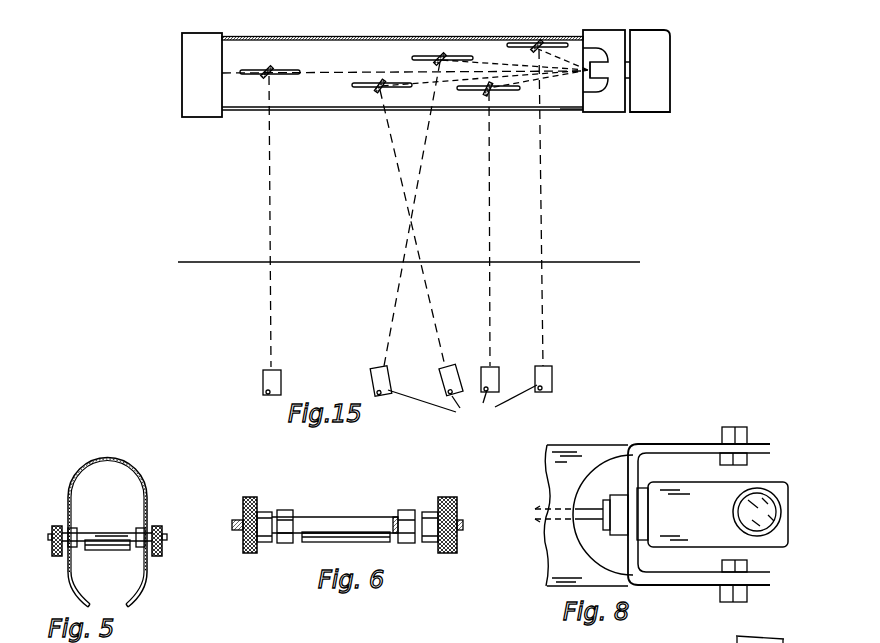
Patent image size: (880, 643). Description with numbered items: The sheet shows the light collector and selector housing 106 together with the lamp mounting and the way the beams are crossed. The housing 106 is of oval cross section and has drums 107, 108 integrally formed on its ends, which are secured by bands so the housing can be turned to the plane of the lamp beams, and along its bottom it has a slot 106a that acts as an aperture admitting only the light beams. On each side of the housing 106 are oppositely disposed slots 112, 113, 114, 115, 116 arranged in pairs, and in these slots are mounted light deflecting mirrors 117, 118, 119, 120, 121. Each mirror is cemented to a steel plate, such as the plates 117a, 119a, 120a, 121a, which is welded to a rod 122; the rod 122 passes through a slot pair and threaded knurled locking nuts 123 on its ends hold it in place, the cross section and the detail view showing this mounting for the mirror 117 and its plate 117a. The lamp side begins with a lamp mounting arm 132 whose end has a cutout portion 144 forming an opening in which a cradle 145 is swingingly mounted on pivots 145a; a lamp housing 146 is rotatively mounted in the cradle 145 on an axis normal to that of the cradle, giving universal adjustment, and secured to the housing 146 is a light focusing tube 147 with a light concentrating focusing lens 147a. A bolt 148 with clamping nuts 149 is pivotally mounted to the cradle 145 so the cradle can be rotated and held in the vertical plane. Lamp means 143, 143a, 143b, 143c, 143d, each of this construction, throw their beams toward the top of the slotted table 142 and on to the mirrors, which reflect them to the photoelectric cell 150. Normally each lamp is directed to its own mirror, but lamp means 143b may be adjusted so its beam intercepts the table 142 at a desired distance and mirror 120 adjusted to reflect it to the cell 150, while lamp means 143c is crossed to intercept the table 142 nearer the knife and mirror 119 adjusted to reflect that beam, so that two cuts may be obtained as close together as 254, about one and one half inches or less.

In FIG. 15, the light collector and selector housing 106 is at (366, 37).
In FIG. 5, the light collector and selector housing 106 is at (85, 465).
In FIG. 15, the slot 106a is at (573, 116).
In FIG. 5, the slot 106a is at (110, 604).
In FIG. 15, the drum 107 is at (622, 113).
In FIG. 15, the drum 108 is at (182, 78).
In FIG. 15, the slot 112 is at (568, 32).
In FIG. 15, the slot 113 is at (468, 92).
In FIG. 15, the slot 114 is at (441, 56).
In FIG. 15, the slot 115 is at (398, 83).
In FIG. 15, the slot 116 is at (265, 70).
In FIG. 15, the light deflecting mirror 117 is at (583, 50).
In FIG. 5, the light deflecting mirror 117 is at (112, 550).
In FIG. 6, the light deflecting mirror 117 is at (330, 542).
In FIG. 15, the steel plate 117a is at (537, 47).
In FIG. 5, the steel plate 117a is at (103, 535).
In FIG. 6, the steel plate 117a is at (315, 530).
In FIG. 15, the light deflecting mirror 118 is at (492, 96).
In FIG. 15, the light deflecting mirror 119 is at (457, 60).
In FIG. 15, the steel plate 119a is at (422, 60).
In FIG. 15, the light deflecting mirror 120 is at (380, 93).
In FIG. 15, the steel plate 120a is at (374, 83).
In FIG. 15, the light deflecting mirror 121 is at (264, 79).
In FIG. 15, the steel plate 121a is at (270, 70).
In FIG. 15, the rod 122 is at (266, 74).
In FIG. 5, the rod 122 is at (118, 530).
In FIG. 6, the rod 122 is at (375, 512).
In FIG. 5, the knurled locking nut 123 is at (57, 526).
In FIG. 6, the knurled locking nut 123 is at (252, 553).
In FIG. 8, the lamp mounting arm 132 is at (557, 565).
In FIG. 15, the slotted table 142 is at (611, 262).
In FIG. 15, the lamp means 143 is at (562, 379).
In FIG. 15, the lamp means 143a is at (510, 367).
In FIG. 15, the lamp means 143b is at (463, 361).
In FIG. 15, the lamp means 143c is at (415, 364).
In FIG. 15, the lamp means 143d is at (310, 362).
In FIG. 8, the cutout portion 144 is at (614, 465).
In FIG. 8, the cradle 145 is at (673, 578).
In FIG. 8, the pivot 145a is at (742, 472).
In FIG. 15, the lamp housing 146 is at (233, 36).
In FIG. 8, the lamp housing 146 is at (654, 492).
In FIG. 15, the light focusing tube 147 is at (474, 414).
In FIG. 8, the light focusing tube 147 is at (733, 510).
In FIG. 8, the light concentrating focusing lens 147a is at (752, 517).
In FIG. 8, the bolt 148 is at (745, 428).
In FIG. 8, the clamping nut 149 is at (722, 436).
In FIG. 15, the photoelectric cell 150 is at (670, 63).
In FIG. 15, the cut spacing 254 is at (407, 266).